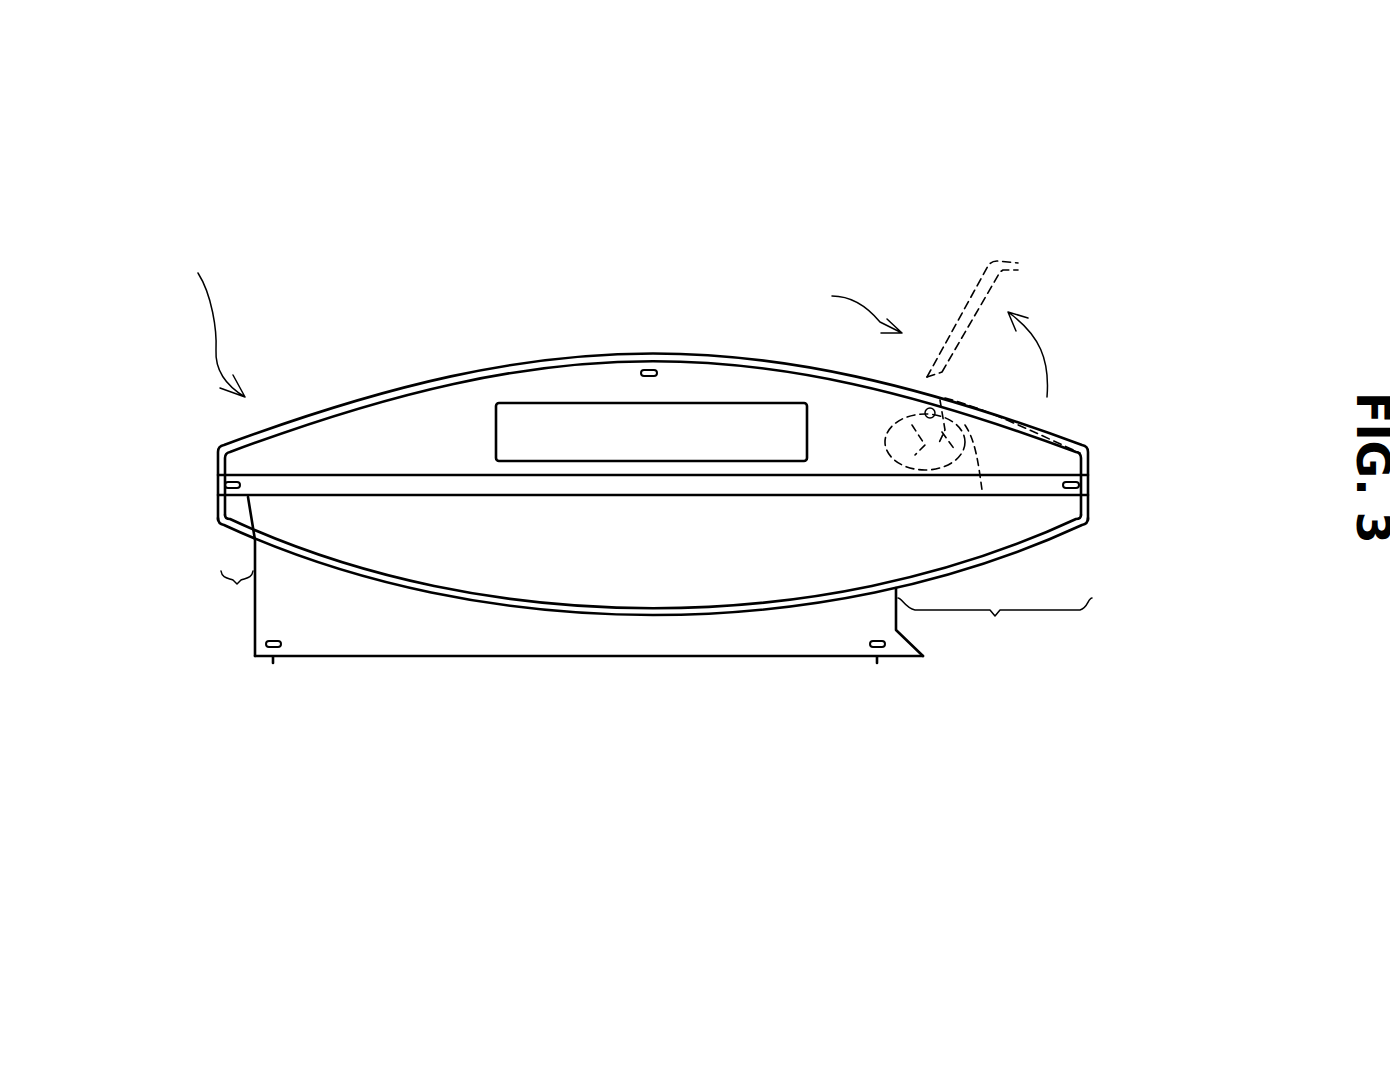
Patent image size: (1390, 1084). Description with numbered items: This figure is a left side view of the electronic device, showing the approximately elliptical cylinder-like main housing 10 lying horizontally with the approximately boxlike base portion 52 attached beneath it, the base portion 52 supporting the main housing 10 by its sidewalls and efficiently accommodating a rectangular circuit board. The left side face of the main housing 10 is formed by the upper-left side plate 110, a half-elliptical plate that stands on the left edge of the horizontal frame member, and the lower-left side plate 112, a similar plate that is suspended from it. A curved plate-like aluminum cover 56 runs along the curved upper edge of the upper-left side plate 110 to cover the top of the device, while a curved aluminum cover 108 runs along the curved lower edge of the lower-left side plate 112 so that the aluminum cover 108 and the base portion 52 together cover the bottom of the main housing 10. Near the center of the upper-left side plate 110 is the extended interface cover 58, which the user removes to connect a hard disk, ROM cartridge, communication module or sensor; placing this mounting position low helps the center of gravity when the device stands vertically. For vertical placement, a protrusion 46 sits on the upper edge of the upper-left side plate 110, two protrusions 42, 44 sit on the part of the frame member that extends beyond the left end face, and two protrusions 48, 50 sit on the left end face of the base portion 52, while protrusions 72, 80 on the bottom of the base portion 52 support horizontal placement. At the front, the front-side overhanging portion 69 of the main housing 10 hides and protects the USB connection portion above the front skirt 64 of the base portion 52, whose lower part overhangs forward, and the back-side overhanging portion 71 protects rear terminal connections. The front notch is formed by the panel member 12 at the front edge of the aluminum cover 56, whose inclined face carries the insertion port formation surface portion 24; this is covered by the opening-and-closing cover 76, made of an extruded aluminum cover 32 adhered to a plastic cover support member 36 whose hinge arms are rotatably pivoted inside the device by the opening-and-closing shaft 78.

The main housing 10 is at (208, 317).
The panel member 12 is at (958, 400).
The insertion port formation surface portion 24 is at (960, 407).
The aluminum cover 32 is at (965, 292).
The cover support member 36 is at (1012, 295).
The protrusion 42 is at (1090, 484).
The protrusion 44 is at (218, 485).
The protrusion 46 is at (650, 368).
The protrusion 48 is at (872, 650).
The protrusion 50 is at (280, 658).
The base portion 52 is at (538, 640).
The aluminum cover 56 is at (521, 360).
The extended interface cover 58 is at (496, 430).
The front skirt 64 is at (910, 632).
The front-side overhanging portion 69 is at (995, 628).
The back-side overhanging portion 71 is at (235, 576).
The protrusion 72 is at (877, 660).
The opening-and-closing cover 76 is at (847, 304).
The opening-and-closing shaft 78 is at (915, 415).
The protrusion 80 is at (273, 660).
The aluminum cover 108 is at (1040, 545).
The upper-left side plate 110 is at (320, 438).
The lower-left side plate 112 is at (375, 540).